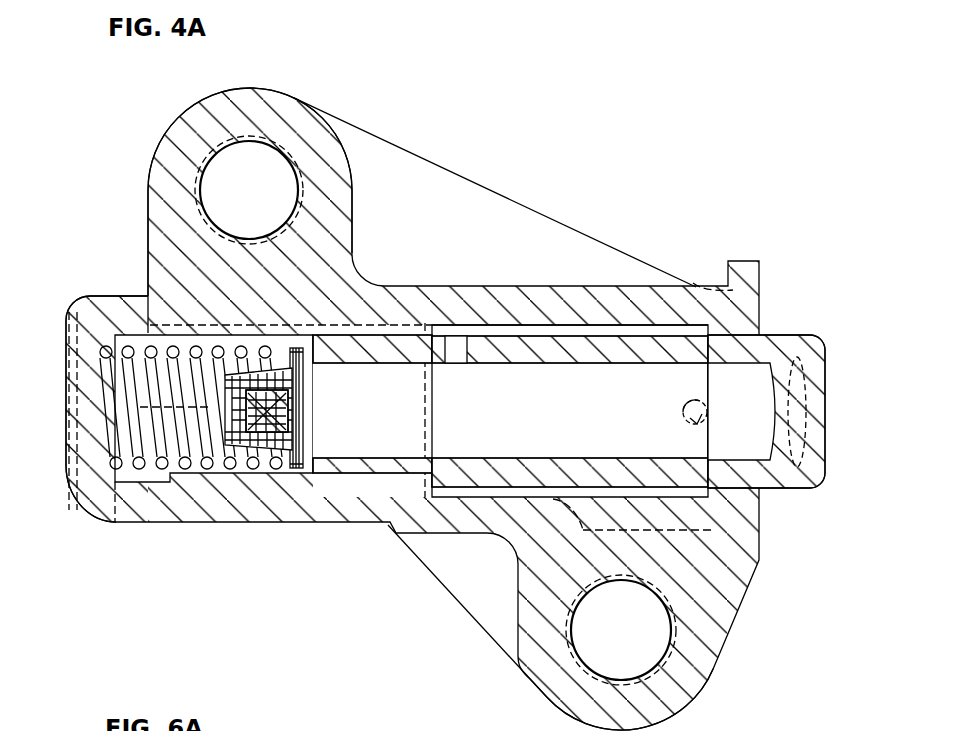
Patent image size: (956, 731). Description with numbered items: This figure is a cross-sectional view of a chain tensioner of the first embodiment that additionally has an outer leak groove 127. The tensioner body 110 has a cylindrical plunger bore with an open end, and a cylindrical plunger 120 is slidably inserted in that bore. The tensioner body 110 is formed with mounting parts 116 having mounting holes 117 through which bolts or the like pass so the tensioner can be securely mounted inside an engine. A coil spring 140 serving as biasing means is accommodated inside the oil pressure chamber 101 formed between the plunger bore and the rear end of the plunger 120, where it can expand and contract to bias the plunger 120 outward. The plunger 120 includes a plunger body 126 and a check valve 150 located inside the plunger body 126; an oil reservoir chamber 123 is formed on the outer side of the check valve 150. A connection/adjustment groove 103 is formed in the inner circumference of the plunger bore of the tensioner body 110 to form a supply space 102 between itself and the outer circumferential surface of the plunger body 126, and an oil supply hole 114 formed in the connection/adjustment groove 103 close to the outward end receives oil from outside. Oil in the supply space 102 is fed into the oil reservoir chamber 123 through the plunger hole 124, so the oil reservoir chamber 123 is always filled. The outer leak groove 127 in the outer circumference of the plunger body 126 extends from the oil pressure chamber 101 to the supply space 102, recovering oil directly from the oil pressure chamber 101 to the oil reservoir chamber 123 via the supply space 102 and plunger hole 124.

The tensioner body 110 is at (495, 286).
The mounting parts 116 is at (160, 140).
The mounting holes 117 is at (223, 194).
The coil spring 140 is at (79, 299).
The oil pressure chamber 101 is at (155, 450).
The check valve 150 is at (253, 463).
The plunger body 126 is at (357, 475).
The plunger 120 is at (773, 336).
The oil reservoir chamber 123 is at (517, 441).
The plunger hole 124 is at (464, 337).
The outer leak groove 127 is at (318, 326).
The supply space 102 is at (579, 322).
The connection/adjustment groove 103 is at (613, 333).
The oil supply hole 114 is at (700, 425).